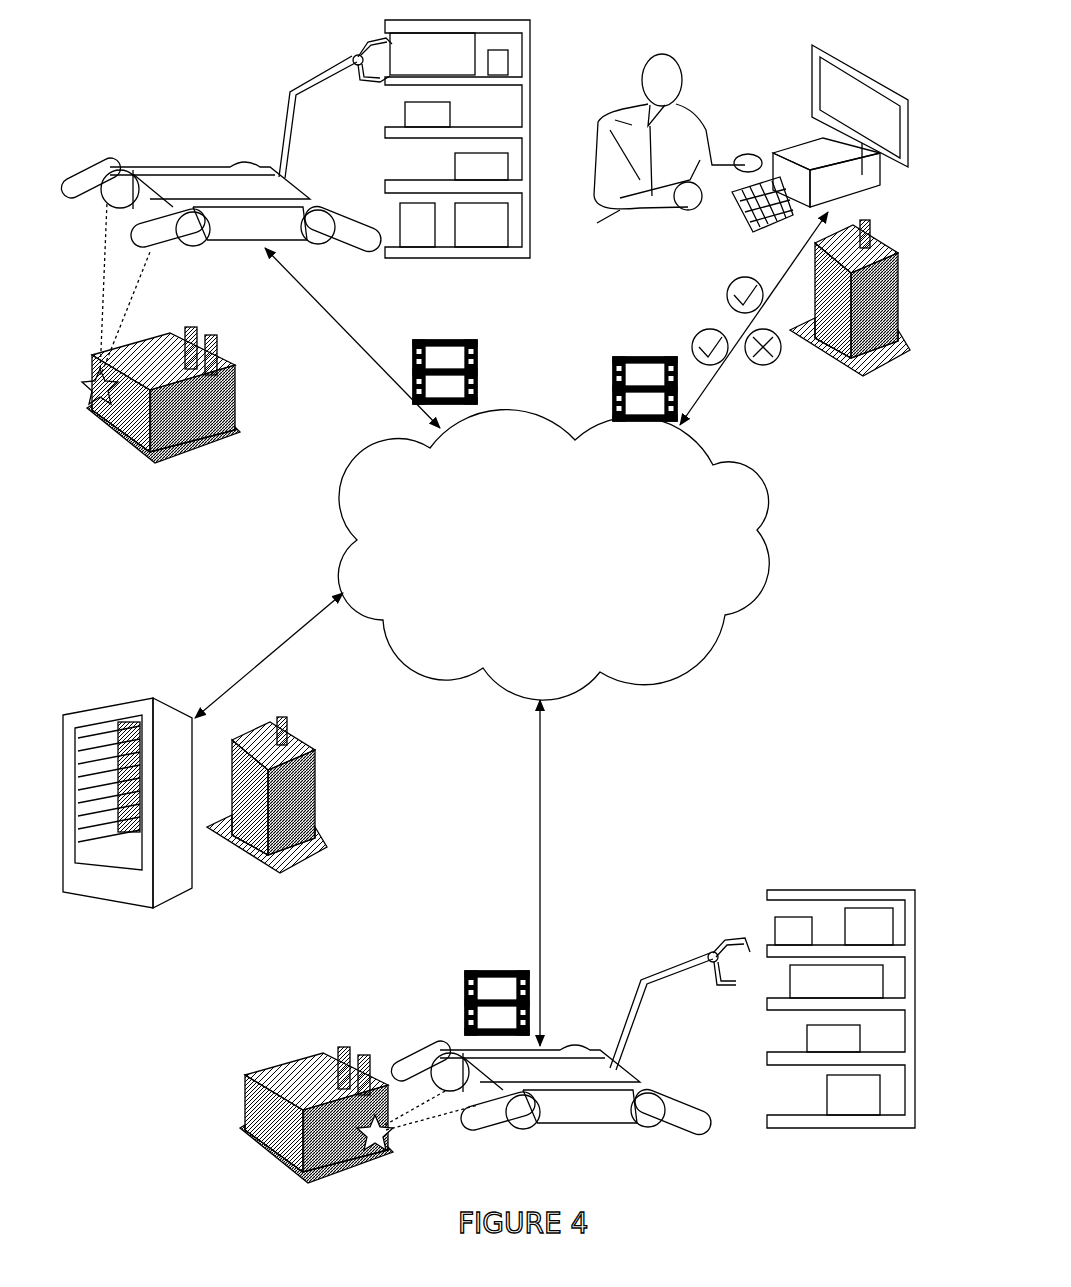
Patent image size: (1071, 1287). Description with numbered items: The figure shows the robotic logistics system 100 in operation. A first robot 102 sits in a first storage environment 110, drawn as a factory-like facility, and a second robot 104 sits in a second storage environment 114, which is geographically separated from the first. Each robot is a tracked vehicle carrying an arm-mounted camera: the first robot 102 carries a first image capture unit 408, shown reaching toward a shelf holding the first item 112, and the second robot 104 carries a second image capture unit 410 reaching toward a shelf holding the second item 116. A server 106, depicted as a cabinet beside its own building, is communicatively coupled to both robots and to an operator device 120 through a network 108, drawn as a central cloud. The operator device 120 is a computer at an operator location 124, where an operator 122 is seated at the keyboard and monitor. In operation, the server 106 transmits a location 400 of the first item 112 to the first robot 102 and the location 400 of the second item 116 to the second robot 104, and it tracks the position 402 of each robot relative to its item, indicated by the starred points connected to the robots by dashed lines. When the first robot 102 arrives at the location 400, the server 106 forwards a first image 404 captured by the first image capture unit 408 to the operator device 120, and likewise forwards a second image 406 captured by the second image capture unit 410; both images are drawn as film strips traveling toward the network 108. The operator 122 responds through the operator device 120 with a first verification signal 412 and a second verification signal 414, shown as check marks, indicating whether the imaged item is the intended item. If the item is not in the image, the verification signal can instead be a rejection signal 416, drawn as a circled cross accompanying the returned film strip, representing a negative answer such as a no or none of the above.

The robotic logistics system 100 is at (152, 52).
The first robot 102 is at (197, 166).
The second robot 104 is at (592, 1048).
The server 106 is at (185, 870).
The network 108 is at (553, 555).
The first storage environment 110 is at (195, 455).
The first item 112 is at (470, 55).
The second storage environment 114 is at (283, 1065).
The second item 116 is at (833, 967).
The operator device 120 is at (812, 85).
The operator 122 is at (680, 112).
The operator location 124 is at (868, 375).
The location 400 is at (495, 172).
The position 402 is at (100, 405).
The first image 404 is at (478, 372).
The second image 406 is at (465, 1000).
The first image capture unit 408 is at (352, 57).
The second image capture unit 410 is at (712, 952).
The first verification signal 412 is at (694, 340).
The second verification signal 414 is at (729, 287).
The rejection signal 416 is at (612, 368).